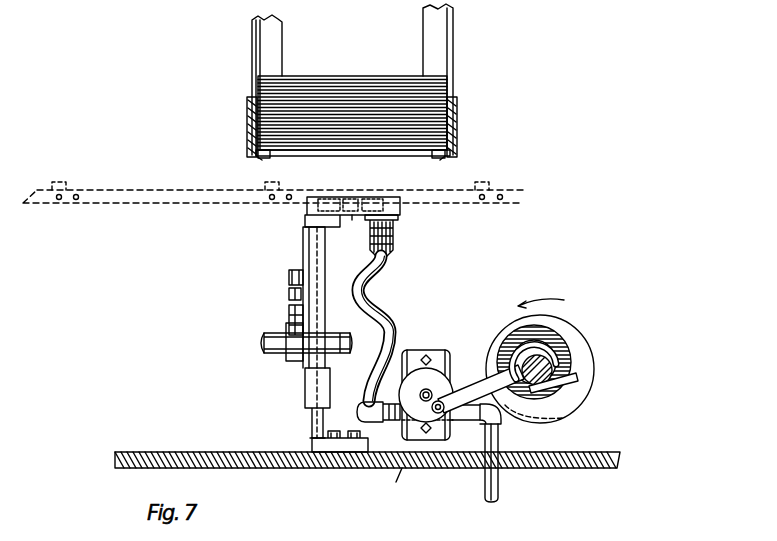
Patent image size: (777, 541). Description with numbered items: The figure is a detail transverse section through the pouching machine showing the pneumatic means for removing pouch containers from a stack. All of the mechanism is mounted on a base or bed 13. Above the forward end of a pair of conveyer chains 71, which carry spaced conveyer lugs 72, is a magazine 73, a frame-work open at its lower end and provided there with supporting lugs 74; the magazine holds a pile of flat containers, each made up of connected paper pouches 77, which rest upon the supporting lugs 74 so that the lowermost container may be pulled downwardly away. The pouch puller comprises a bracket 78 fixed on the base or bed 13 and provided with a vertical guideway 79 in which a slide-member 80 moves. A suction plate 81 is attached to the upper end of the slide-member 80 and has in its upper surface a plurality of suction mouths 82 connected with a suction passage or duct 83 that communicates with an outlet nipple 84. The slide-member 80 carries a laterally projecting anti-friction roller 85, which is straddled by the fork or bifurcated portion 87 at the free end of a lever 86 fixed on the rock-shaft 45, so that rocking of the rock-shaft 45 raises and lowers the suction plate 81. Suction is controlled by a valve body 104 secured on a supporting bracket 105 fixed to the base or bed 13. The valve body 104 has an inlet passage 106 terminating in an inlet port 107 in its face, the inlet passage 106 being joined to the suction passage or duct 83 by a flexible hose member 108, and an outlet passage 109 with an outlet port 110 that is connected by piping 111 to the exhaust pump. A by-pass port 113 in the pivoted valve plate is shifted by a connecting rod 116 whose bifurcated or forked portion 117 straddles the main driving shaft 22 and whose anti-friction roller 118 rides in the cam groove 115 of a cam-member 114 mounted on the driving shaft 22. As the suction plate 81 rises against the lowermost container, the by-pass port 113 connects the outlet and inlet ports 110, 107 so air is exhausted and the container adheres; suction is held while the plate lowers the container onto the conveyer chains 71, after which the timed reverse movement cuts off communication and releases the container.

The base or bed 13 is at (267, 452).
The main driving shaft 22 is at (554, 368).
The rock-shaft 45 is at (274, 355).
The conveyer chains 71 is at (116, 206).
The conveyer lugs 72 is at (58, 189).
The magazine 73 is at (454, 62).
The supporting lugs 74 is at (262, 158).
The paper pouches 77 is at (373, 84).
The bracket 78 is at (328, 389).
The vertical guideway 79 is at (318, 302).
The slide-member 80 is at (305, 225).
The suction plate 81 is at (352, 205).
The suction mouths 82 is at (326, 198).
The suction passage or duct 83 is at (358, 222).
The outlet nipple 84 is at (395, 229).
The anti-friction roller 85 is at (290, 295).
The lever 86 is at (289, 318).
The fork or bifurcated portion 87 is at (298, 278).
The valve body 104 is at (443, 352).
The supporting bracket 105 is at (408, 352).
The inlet passage 106 is at (387, 397).
The inlet port 107 is at (392, 484).
The flexible hose member 108 is at (365, 297).
The outlet passage 109 is at (450, 388).
The outlet port 110 is at (433, 468).
The piping 111 is at (499, 488).
The by-pass port 113 is at (446, 400).
The cam-member 114 is at (560, 333).
The cam groove 115 is at (518, 329).
The connecting rod 116 is at (503, 421).
The bifurcated or forked portion 117 is at (580, 382).
The anti-friction roller 118 is at (548, 410).